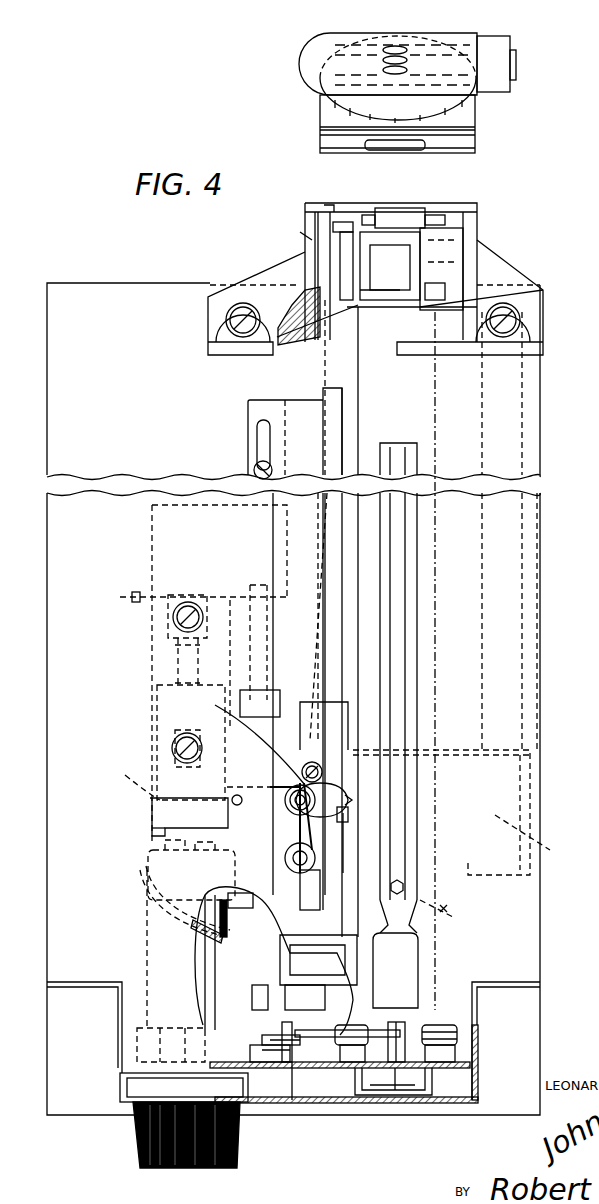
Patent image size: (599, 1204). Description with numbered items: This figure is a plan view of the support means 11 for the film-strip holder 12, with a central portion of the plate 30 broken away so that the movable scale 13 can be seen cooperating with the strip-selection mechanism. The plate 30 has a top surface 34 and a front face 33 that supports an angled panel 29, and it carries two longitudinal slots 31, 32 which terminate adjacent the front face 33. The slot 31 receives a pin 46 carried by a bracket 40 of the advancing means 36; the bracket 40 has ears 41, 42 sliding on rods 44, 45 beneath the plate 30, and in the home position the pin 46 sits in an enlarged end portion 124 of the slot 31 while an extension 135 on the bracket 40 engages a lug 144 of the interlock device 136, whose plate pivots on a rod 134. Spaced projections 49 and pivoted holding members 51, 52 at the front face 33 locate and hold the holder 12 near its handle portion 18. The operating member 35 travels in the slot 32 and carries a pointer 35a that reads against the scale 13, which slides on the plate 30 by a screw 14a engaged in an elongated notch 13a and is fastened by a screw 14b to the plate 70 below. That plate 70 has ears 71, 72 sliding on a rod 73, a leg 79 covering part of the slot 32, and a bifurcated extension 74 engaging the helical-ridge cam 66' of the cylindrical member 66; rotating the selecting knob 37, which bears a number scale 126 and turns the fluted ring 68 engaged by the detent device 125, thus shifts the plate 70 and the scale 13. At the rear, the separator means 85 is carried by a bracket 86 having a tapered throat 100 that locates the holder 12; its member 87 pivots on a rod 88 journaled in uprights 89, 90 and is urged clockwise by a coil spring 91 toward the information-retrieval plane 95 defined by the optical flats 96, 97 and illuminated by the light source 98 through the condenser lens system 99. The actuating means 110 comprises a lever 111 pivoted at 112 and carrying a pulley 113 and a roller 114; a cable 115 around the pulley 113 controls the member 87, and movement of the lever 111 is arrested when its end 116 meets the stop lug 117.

The support means 11 is at (545, 535).
The holder 12 is at (430, 695).
The scale 13 is at (298, 408).
The elongated notch 13a is at (259, 440).
The screw 14a is at (255, 468).
The screw 14b is at (242, 737).
The handle portion 18 is at (400, 1100).
The panel 29 is at (455, 1105).
The plate 30 is at (518, 932).
The slot 31 is at (400, 523).
The slot 32 is at (340, 523).
The front face 33 is at (470, 1088).
The top surface 34 is at (172, 402).
The operating member 35 is at (325, 780).
The pointer 35a is at (300, 790).
The advancing means 36 is at (450, 913).
The selecting knob 37 is at (242, 1150).
The bracket 40 is at (545, 845).
The ear 41 is at (510, 748).
The ear 42 is at (310, 760).
The rod 44 is at (530, 425).
The rod 45 is at (300, 375).
The pin 46 is at (415, 880).
The projections 49 is at (450, 1030).
The holding member 51 is at (455, 1050).
The holding member 52 is at (360, 1090).
The cylindrical member 66 is at (127, 949).
The helical-ridge cam 66' is at (167, 901).
The fluted ring 68 is at (140, 1040).
The plate 70 is at (320, 682).
The ear 71 is at (250, 690).
The ear 72 is at (262, 965).
The rod 73 is at (258, 668).
The bifurcated extension 74 is at (215, 905).
The leg 79 is at (325, 838).
The separator means 85 is at (488, 197).
The bracket 86 is at (273, 270).
The member 87 is at (390, 240).
The rod 88 is at (345, 220).
The upright 89 is at (500, 250).
The upright 90 is at (304, 240).
The coil spring 91 is at (325, 210).
The information-retrieval plane 95 is at (491, 146).
The optical flat 96 is at (470, 146).
The optical flat 97 is at (472, 137).
The light source 98 is at (304, 60).
The condenser lens system 99 is at (338, 108).
The tapered throat 100 is at (428, 300).
The actuating means 110 is at (134, 807).
The lever 111 is at (190, 800).
The pivot 112 is at (233, 796).
The pulley 113 is at (295, 805).
The roller 114 is at (316, 858).
The cable 115 is at (318, 328).
The end 116 is at (122, 779).
The stop lug 117 is at (160, 830).
The enlarged end portion 124 is at (410, 965).
The detent device 125 is at (262, 1040).
The number scale 126 is at (128, 1082).
The rod 134 is at (310, 1040).
The extension 135 is at (262, 950).
The interlock device 136 is at (368, 1090).
The lug 144 is at (305, 1100).